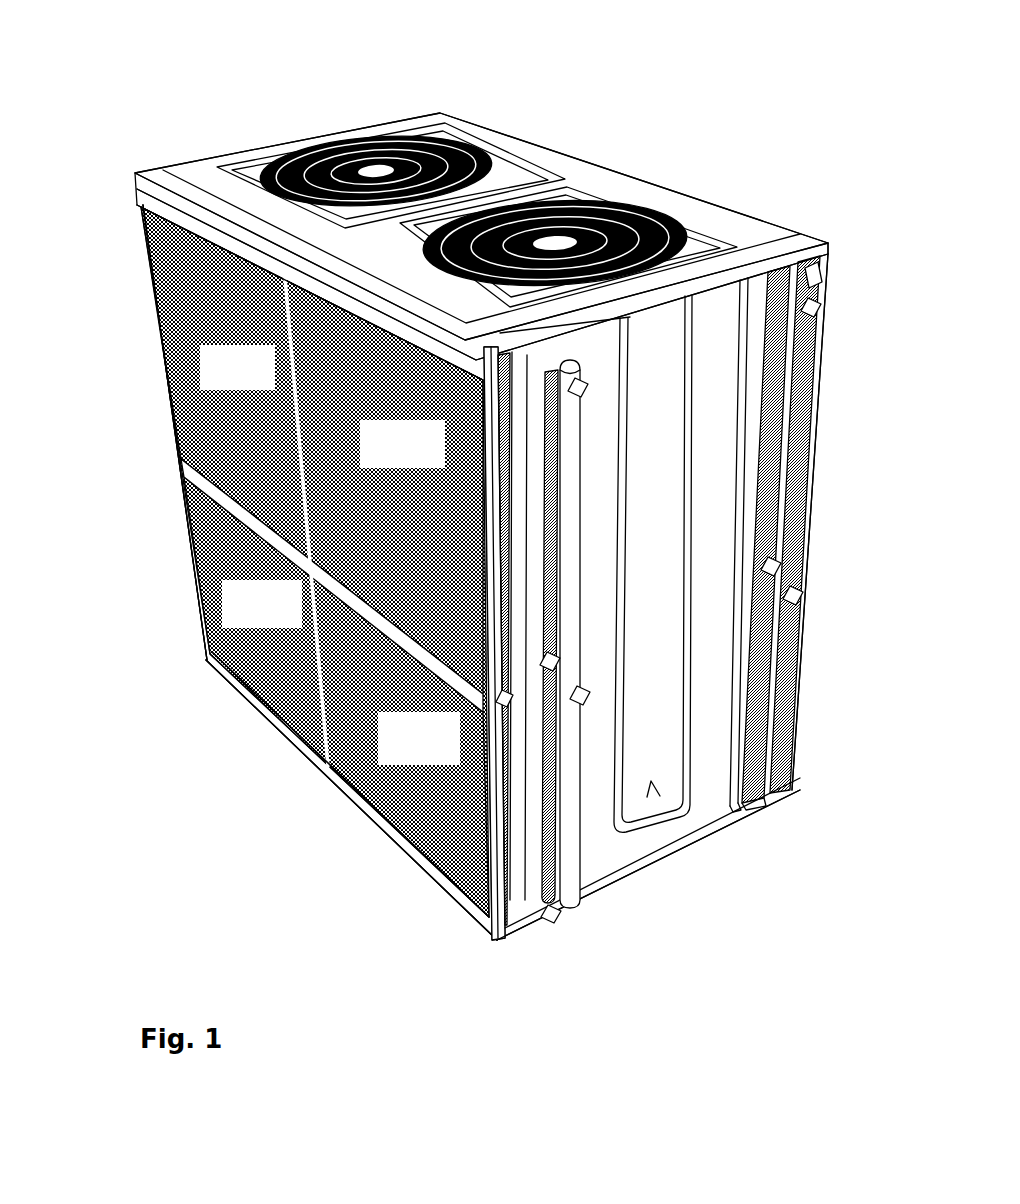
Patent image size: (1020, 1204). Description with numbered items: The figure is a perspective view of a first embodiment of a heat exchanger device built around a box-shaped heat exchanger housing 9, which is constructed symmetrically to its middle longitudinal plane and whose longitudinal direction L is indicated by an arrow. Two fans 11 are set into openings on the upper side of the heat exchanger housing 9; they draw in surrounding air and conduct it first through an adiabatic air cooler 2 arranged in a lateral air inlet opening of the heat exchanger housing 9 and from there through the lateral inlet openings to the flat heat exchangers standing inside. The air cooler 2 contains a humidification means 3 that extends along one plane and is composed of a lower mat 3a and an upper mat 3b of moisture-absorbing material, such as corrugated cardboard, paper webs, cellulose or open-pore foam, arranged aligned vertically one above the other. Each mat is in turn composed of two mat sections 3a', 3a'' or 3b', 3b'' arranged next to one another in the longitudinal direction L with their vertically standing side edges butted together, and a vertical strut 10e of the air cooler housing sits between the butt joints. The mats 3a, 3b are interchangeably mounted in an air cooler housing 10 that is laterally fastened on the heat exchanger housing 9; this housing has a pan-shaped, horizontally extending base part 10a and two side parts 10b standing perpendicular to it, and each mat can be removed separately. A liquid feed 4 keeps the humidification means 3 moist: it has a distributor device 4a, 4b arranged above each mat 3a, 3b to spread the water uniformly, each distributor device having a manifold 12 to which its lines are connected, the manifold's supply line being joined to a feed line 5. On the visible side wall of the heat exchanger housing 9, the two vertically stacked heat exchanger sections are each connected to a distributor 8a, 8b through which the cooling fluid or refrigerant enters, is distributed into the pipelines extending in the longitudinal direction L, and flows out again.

The adiabatic air cooler 2 is at (197, 730).
The humidification means 3 is at (285, 735).
The lower mat 3a is at (280, 697).
The upper mat 3b is at (262, 450).
The mat section 3a' is at (256, 619).
The mat section 3a'' is at (400, 747).
The mat section 3b' is at (225, 383).
The mat section 3b'' is at (384, 487).
The liquid feed 4 is at (233, 200).
The distributor device 4a is at (183, 462).
The distributor device 4b is at (160, 206).
The feed line 5 is at (662, 591).
The distributor 8a is at (568, 824).
The distributor 8b is at (565, 515).
The heat exchanger housing 9 is at (434, 130).
The air cooler housing 10 is at (368, 822).
The base part 10a is at (420, 866).
The side part 10b is at (168, 415).
The vertical strut 10e is at (328, 770).
The fan 11 is at (474, 148).
The manifold 12 is at (500, 698).
The longitudinal direction L is at (670, 168).